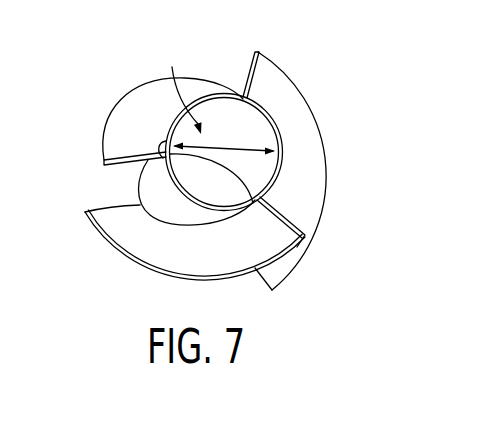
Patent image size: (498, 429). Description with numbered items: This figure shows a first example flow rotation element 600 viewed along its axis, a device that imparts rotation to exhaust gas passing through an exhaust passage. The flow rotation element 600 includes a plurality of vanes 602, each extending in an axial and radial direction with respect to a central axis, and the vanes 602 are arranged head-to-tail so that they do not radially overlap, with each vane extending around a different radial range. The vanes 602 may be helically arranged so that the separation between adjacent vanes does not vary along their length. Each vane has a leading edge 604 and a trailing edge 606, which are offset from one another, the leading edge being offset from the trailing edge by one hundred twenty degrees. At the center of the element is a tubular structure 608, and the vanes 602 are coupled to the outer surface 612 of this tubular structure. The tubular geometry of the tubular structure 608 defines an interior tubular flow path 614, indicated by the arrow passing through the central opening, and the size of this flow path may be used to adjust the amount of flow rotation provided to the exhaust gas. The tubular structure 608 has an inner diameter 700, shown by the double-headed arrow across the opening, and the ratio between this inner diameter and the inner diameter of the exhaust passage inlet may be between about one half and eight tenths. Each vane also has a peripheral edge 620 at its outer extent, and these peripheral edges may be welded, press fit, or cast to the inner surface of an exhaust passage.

The flow rotation element 600 is at (307, 60).
The vanes 602 is at (308, 144).
The leading edge 604 is at (98, 207).
The trailing edge 606 is at (252, 52).
The tubular structure 608 is at (241, 98).
The outer surface 612 is at (178, 206).
The interior tubular flow path 614 is at (179, 87).
The peripheral edge 620 is at (299, 101).
The inner diameter 700 is at (225, 152).